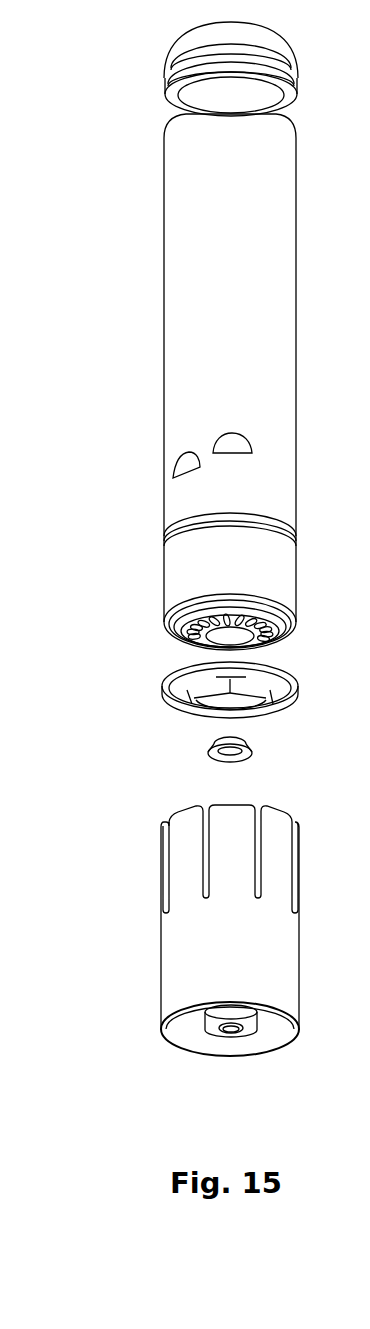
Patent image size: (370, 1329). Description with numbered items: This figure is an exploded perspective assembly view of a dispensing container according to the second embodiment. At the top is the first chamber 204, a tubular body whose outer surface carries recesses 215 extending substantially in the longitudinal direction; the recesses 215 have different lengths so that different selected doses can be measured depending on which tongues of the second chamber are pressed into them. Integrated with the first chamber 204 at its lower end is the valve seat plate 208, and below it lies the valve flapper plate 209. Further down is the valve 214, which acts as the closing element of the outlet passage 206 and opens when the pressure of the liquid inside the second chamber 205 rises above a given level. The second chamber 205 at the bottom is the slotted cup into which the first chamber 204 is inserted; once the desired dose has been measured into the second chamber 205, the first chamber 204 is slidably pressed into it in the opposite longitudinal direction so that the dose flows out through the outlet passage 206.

The first chamber 204 is at (163, 383).
The second chamber 205 is at (173, 930).
The outlet passage 206 is at (213, 1024).
The valve seat plate 208 is at (183, 639).
The valve flapper plate 209 is at (168, 705).
The valve 214 is at (205, 752).
The recesses 215 is at (182, 466).